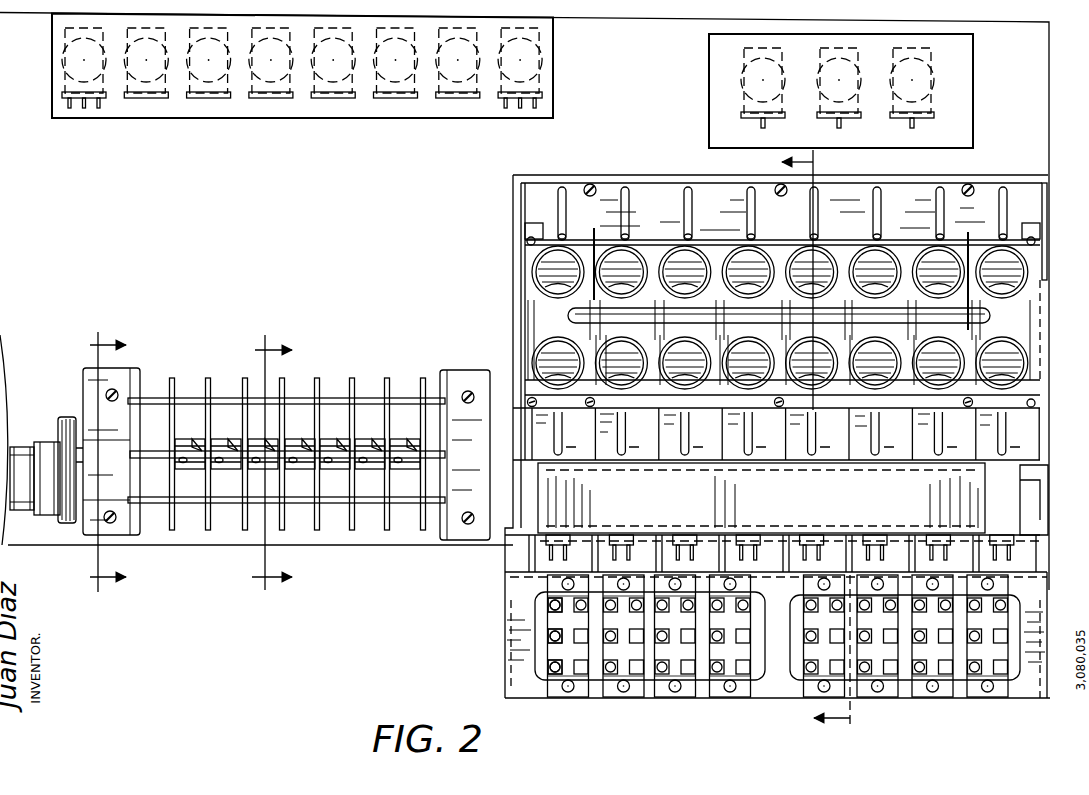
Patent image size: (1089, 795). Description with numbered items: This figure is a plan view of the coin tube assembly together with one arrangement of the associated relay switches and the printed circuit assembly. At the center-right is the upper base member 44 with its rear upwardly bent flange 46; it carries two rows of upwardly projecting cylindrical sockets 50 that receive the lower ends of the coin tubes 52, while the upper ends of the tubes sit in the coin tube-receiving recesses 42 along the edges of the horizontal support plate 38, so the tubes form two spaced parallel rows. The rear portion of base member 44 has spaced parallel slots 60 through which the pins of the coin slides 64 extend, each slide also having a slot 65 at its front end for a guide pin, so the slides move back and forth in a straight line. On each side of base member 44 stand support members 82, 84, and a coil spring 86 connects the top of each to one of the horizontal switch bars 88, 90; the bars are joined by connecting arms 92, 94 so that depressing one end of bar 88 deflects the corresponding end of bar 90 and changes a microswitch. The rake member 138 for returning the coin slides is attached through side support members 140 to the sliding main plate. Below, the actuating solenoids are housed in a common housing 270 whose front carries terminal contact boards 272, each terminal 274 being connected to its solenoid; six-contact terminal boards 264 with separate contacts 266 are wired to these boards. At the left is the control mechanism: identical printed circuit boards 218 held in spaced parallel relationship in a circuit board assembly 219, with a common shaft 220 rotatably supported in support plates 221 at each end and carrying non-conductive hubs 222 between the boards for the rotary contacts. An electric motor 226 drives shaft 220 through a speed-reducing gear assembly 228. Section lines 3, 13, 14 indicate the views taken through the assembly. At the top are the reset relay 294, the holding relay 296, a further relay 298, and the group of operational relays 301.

The operational relays 301 is at (252, 124).
The reset relay 294 is at (745, 70).
The holding relay 296 is at (855, 70).
The module 298 is at (932, 60).
The section line 3- 3 is at (827, 442).
The rear upwardly bent flange 46 is at (666, 178).
The support member 82 is at (526, 240).
The side support members 140 is at (1044, 574).
The support member 84 is at (1036, 241).
The slots 60 is at (684, 205).
The upper base member 44 is at (919, 225).
The switch bar 90 is at (790, 238).
The connecting arm 92 is at (597, 236).
The connecting arm 94 is at (971, 238).
The coil spring 86 is at (533, 232).
The coin tube-receiving recesses 42 is at (640, 283).
The coin tubes 52 is at (722, 284).
The cylindrical sockets 50 is at (770, 356).
The horizontal support plate 38 is at (1027, 329).
The switch bar 88 is at (740, 394).
The coin slides 64 is at (606, 455).
The slot 65 is at (684, 452).
The common housing 270 is at (796, 508).
The rake member 138 is at (1040, 466).
The terminal contact boards 272 is at (546, 540).
The terminal 274 is at (548, 549).
The six-contact terminal board 264 is at (552, 688).
The contact 266 is at (548, 640).
The section line 13- 13 is at (128, 462).
The section line 14- 14 is at (292, 464).
The electric motor 226 is at (42, 446).
The speed-reducing gear assembly 228 is at (66, 526).
The support plates 221 is at (135, 532).
The circuit board assembly 219 is at (410, 352).
The common shaft 220 is at (284, 462).
The printed circuit boards 218 is at (210, 380).
The hubs 222 is at (296, 440).